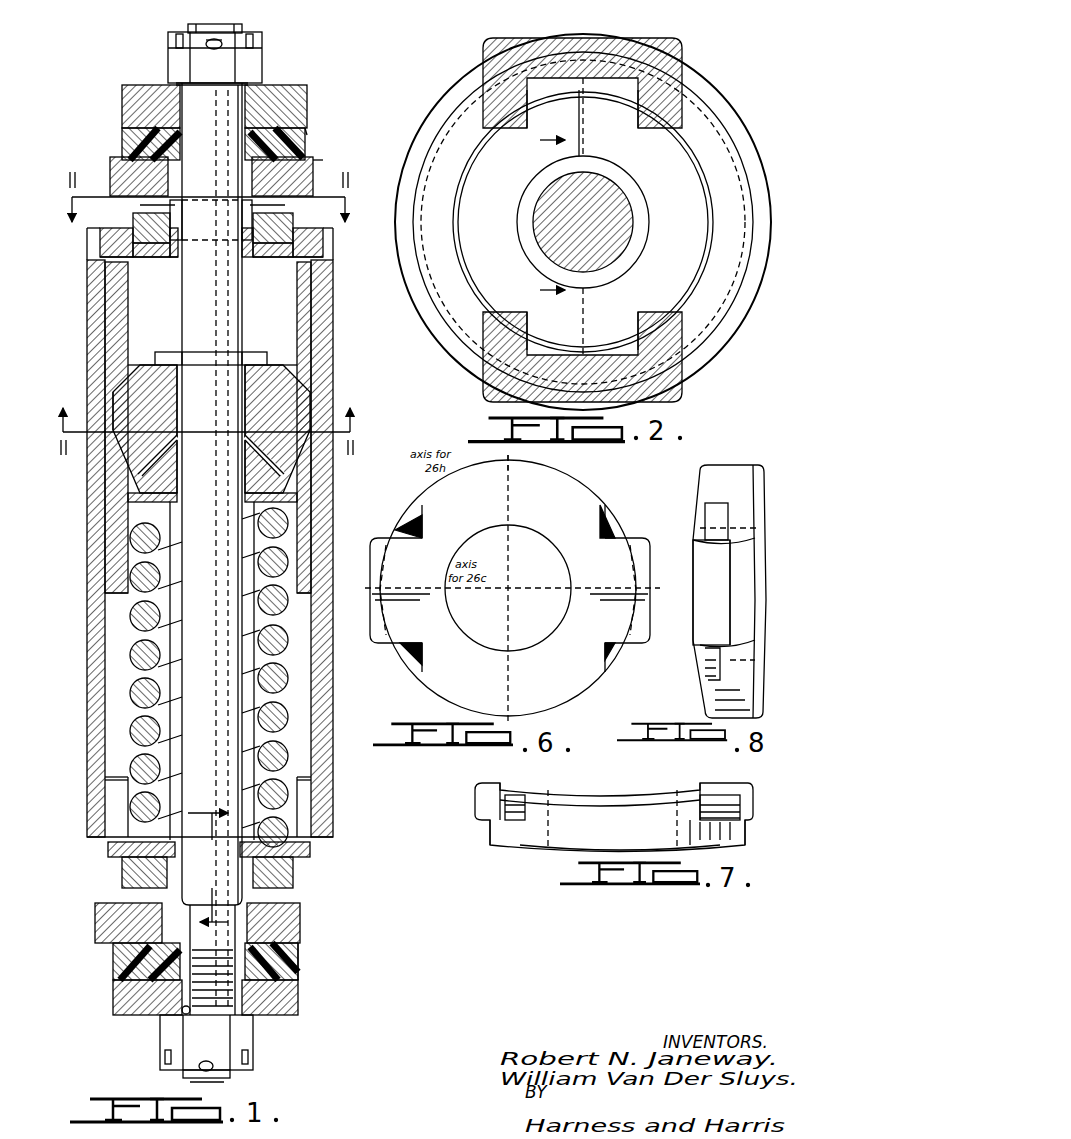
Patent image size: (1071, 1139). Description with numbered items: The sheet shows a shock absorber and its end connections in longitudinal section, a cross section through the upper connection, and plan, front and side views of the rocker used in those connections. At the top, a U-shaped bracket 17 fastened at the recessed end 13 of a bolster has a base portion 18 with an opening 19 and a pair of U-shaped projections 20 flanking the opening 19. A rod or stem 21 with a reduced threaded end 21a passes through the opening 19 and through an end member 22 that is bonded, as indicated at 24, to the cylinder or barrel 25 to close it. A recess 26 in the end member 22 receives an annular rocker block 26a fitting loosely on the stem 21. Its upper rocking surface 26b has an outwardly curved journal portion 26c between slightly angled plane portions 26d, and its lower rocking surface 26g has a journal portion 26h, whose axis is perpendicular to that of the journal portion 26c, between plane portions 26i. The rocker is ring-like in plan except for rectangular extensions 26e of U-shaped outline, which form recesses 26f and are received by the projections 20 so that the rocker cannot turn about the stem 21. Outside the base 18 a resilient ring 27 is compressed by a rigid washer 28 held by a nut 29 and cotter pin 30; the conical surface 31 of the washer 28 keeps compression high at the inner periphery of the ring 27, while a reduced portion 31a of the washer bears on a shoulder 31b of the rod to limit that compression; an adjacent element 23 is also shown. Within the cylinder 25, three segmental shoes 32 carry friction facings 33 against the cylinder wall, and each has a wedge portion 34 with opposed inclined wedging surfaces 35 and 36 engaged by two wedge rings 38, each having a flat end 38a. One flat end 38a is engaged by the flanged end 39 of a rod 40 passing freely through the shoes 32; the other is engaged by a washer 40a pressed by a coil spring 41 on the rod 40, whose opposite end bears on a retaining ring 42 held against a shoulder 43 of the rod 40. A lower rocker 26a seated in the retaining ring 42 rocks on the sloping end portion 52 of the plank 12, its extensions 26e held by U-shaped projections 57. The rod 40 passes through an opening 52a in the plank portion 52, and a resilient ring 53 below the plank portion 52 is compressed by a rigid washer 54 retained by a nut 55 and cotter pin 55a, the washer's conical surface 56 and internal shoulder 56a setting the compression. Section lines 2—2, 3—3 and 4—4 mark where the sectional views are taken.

In FIG. 1, the plank 12 is at (110, 955).
In FIG. 1, the recessed end of the bolster 13 is at (147, 995).
In FIG. 1, the U-shaped bracket 17 is at (325, 165).
In FIG. 1, the base portion of the bracket 18 is at (307, 146).
In FIG. 1, the opening in the bracket base 19 is at (282, 176).
In FIG. 1, the U-shaped projections 20 is at (140, 206).
In FIG. 2, the U-shaped projections 20 is at (670, 72).
In FIG. 2, the rod or stem 21 is at (583, 222).
In FIG. 1, the reduced threaded end 21a is at (190, 26).
In FIG. 1, the end member 22 is at (323, 240).
In FIG. 1, the inner tube wall 23 is at (333, 276).
In FIG. 1, the bond 24 is at (323, 258).
In FIG. 1, the cylinder or barrel 25 is at (87, 302).
In FIG. 1, the recess in the end member 26 is at (100, 254).
In FIG. 1, the annular rocker block 26a is at (180, 262).
In FIG. 2, the annular rocker block 26a is at (700, 148).
In FIG. 6, the annular rocker block 26a is at (560, 470).
In FIG. 8, the annular rocker block 26a is at (738, 466).
In FIG. 7, the annular rocker block 26a is at (470, 830).
In FIG. 1, the upper rocking surface 26b is at (222, 256).
In FIG. 6, the upper rocking surface 26b is at (575, 520).
In FIG. 1, the journal portion of the upper rocking surface 26c is at (182, 547).
In FIG. 2, the journal portion of the upper rocking surface 26c is at (583, 90).
In FIG. 6, the journal portion of the upper rocking surface 26c is at (660, 565).
In FIG. 8, the journal portion of the upper rocking surface 26c is at (693, 590).
In FIG. 1, the plane portions of the upper rocking surface 26d is at (170, 225).
In FIG. 2, the plane portions of the upper rocking surface 26d is at (480, 140).
In FIG. 6, the plane portions of the upper rocking surface 26d is at (600, 528).
In FIG. 8, the plane portions of the upper rocking surface 26d is at (740, 545).
In FIG. 2, the rectangular extensions 26e is at (660, 118).
In FIG. 6, the rectangular extensions 26e is at (640, 612).
In FIG. 8, the rectangular extensions 26e is at (710, 605).
In FIG. 7, the rectangular extensions 26e is at (490, 805).
In FIG. 2, the recesses in the upper surface 26f is at (470, 150).
In FIG. 6, the recesses in the upper surface 26f is at (425, 520).
In FIG. 8, the recesses in the upper surface 26f is at (712, 518).
In FIG. 7, the recesses in the upper surface 26f is at (520, 797).
In FIG. 1, the lower rocking surface 26g is at (110, 292).
In FIG. 7, the lower rocking surface 26g is at (525, 850).
In FIG. 6, the journal portion of the lower rocking surface 26h is at (500, 460).
In FIG. 7, the journal portion of the lower rocking surface 26h is at (635, 844).
In FIG. 8, the plane portions of the lower rocking surface 26i is at (757, 580).
In FIG. 7, the plane portions of the lower rocking surface 26i is at (555, 855).
In FIG. 1, the resilient ring 27 is at (305, 135).
In FIG. 1, the rigid washer 28 is at (307, 96).
In FIG. 1, the nut 29 is at (262, 54).
In FIG. 1, the cotter pin 30 is at (206, 44).
In FIG. 1, the conical surface 31 is at (122, 142).
In FIG. 1, the reduced portion of the washer 31a is at (185, 84).
In FIG. 1, the shoulder 31b is at (122, 92).
In FIG. 1, the segmental shoes 32 is at (311, 526).
In FIG. 1, the friction facings 33 is at (297, 498).
In FIG. 1, the wedge portion 34 is at (128, 462).
In FIG. 1, the inclined wedging surface 35 is at (300, 350).
In FIG. 1, the inclined wedging surface 36 is at (238, 470).
In FIG. 1, the wedge ring 38 is at (211, 429).
In FIG. 1, the flat end of the wedge ring 38a is at (178, 348).
In FIG. 1, the flanged end 39 is at (268, 352).
In FIG. 1, the rod 40 is at (215, 741).
In FIG. 1, the washer 40a is at (254, 532).
In FIG. 1, the coil spring 41 is at (130, 694).
In FIG. 1, the retaining ring 42 is at (333, 812).
In FIG. 1, the shoulder on the rod 43 is at (108, 848).
In FIG. 1, the sloping end portion of the plank 52 is at (113, 930).
In FIG. 1, the opening in the plank portion 52a is at (300, 914).
In FIG. 1, the resilient ring 53 is at (298, 952).
In FIG. 1, the rigid washer 54 is at (113, 1000).
In FIG. 1, the nut 55 is at (253, 1043).
In FIG. 1, the cotter pin 55a is at (215, 1079).
In FIG. 1, the conical surface 56 is at (298, 970).
In FIG. 1, the internal shoulder 56a is at (182, 1012).
In FIG. 1, the U-shaped projections 57 is at (135, 880).
In FIG. 1, the section line 2- 2 is at (199, 202).
In FIG. 1, the section line 3- 3 is at (208, 425).
In FIG. 1, the section line 4- 4 is at (208, 863).